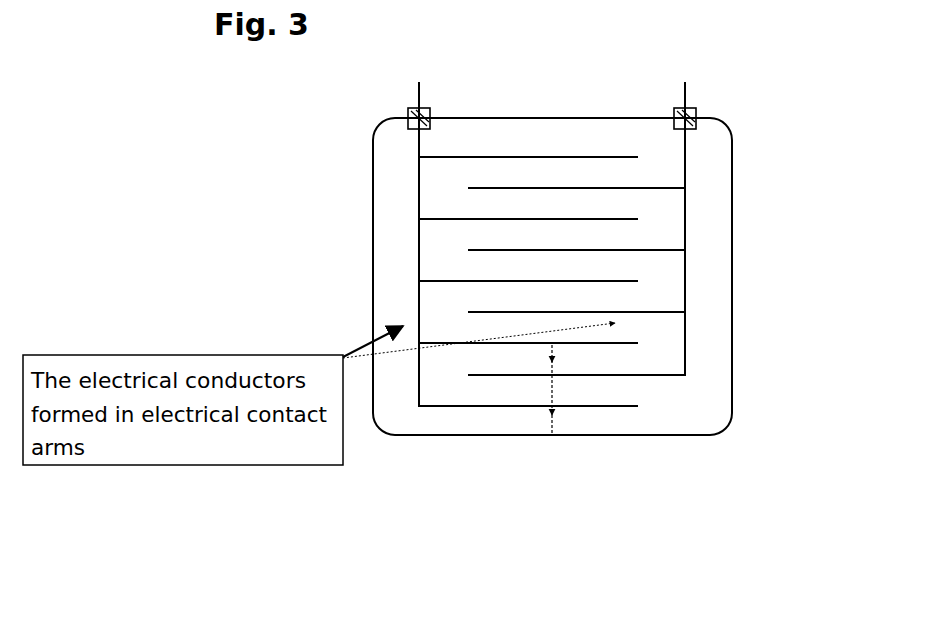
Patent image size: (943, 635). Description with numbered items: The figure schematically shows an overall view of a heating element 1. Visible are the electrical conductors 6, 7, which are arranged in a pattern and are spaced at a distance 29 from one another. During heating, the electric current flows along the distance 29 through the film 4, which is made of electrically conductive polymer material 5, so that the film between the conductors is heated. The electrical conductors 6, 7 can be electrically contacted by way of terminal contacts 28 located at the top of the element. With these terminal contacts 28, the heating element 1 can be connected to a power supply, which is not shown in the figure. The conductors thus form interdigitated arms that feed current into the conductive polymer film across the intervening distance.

The heating element 1 is at (568, 264).
The film 4 is at (619, 276).
The electrically conductive polymer material 5 is at (711, 282).
The electrical conductor 6 is at (554, 244).
The electrical conductor 7 is at (685, 233).
The terminal contact 28 is at (415, 108).
The distance 29 is at (552, 390).